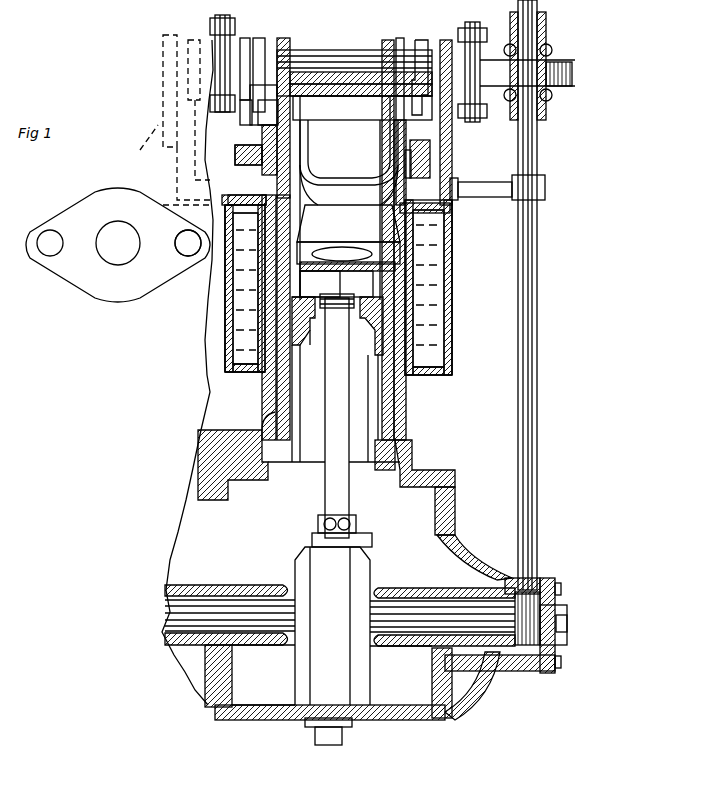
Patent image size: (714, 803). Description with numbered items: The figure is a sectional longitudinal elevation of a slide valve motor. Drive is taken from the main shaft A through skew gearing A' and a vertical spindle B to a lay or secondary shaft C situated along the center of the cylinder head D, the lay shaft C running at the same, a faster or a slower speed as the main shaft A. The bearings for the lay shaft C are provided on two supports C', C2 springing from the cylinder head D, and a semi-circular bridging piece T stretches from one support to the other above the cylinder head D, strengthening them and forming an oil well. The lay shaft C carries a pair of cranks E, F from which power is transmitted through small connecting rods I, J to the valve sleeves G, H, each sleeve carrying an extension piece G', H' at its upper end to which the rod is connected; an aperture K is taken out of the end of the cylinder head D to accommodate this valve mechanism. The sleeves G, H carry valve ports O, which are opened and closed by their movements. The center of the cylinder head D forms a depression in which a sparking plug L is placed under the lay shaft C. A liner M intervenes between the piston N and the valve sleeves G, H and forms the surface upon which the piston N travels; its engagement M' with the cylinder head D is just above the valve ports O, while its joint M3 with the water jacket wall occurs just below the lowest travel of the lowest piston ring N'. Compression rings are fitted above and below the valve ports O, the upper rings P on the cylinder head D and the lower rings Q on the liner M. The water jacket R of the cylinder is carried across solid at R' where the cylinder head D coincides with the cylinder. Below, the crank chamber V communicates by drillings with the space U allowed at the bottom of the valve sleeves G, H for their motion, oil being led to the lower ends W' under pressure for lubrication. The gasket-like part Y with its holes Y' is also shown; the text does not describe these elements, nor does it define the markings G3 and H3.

The main shaft A is at (340, 615).
The skew gearing A' is at (547, 333).
The vertical spindle B is at (514, 446).
The lay or secondary shaft C is at (354, 64).
The lay shaft support C' is at (305, 108).
The lay shaft support C2 is at (379, 108).
The semi-circular bridging piece T is at (362, 107).
The cylinder head D is at (349, 162).
The crank E is at (226, 6).
The crank F is at (345, 121).
The valve sleeve G is at (247, 196).
The valve sleeve extension piece G' is at (244, 166).
The valve passage G3 is at (298, 318).
The inner valve sleeve H is at (427, 148).
The valve sleeve extension piece H' is at (265, 117).
The valve passage H3 is at (275, 340).
The valve connecting rod I is at (239, 117).
The valve connecting rod J is at (408, 150).
The aperture K is at (476, 10).
The sparking plug L is at (348, 223).
The valve ports O is at (348, 256).
The piston N is at (336, 284).
The lowest piston ring N' is at (320, 284).
The liner M is at (335, 416).
The liner engagement M' is at (255, 293).
The liner joint M3 is at (309, 384).
The upper compression rings P is at (240, 258).
The lower compression rings Q is at (330, 287).
The water jacket R is at (334, 375).
The solid water jacket portion R' is at (349, 204).
The space at bottom of valve sleeves U is at (338, 383).
The crank chamber V is at (238, 510).
The lower ends of drillings W' is at (319, 472).
The gasket Y is at (118, 261).
The gasket bolt hole Y' is at (175, 272).